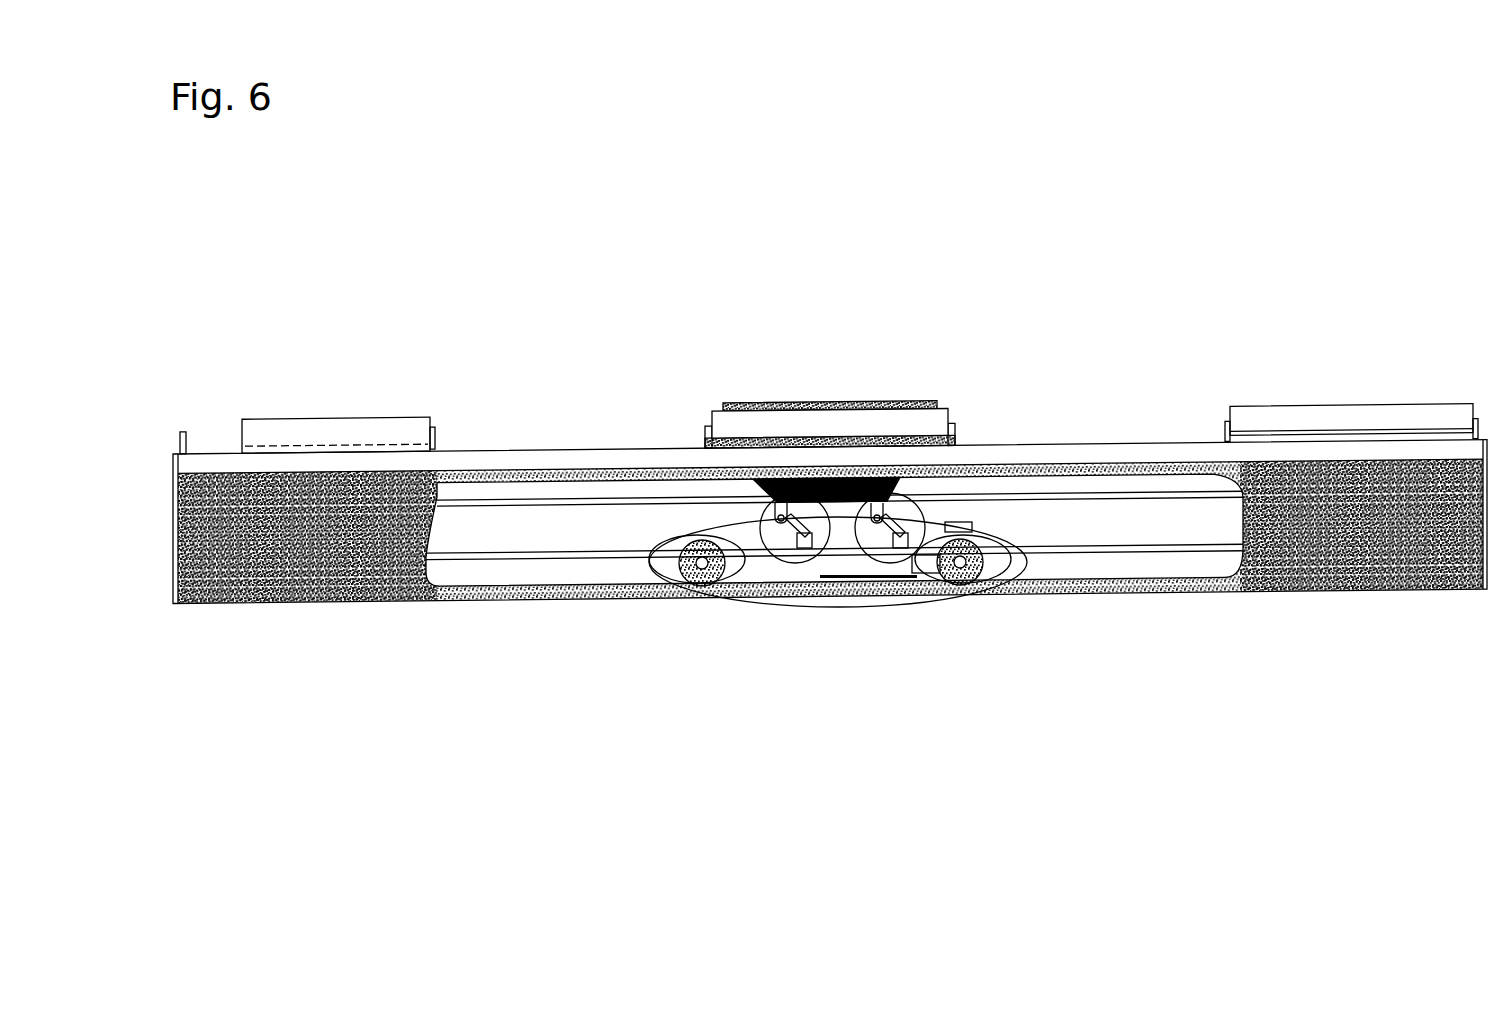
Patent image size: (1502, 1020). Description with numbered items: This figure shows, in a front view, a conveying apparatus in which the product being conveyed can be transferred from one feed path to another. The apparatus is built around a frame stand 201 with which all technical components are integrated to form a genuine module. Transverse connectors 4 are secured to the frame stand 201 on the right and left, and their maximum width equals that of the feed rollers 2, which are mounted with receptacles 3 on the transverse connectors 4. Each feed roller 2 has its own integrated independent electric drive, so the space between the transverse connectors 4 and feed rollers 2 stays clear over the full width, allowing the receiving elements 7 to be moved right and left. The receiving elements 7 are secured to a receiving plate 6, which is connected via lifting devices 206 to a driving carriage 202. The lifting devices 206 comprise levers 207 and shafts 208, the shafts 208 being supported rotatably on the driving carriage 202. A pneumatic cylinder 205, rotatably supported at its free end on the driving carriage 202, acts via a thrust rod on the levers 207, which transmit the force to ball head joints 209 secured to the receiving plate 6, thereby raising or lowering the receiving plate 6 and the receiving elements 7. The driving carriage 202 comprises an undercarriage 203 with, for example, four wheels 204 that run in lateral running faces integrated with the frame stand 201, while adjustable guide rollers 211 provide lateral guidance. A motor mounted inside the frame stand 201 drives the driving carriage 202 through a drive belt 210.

The feed rollers 2 is at (258, 433).
The receptacles 3 is at (195, 453).
The transverse connectors 4 is at (310, 467).
The receiving plate 6 is at (867, 492).
The receiving elements 7 is at (835, 403).
The frame stand 201 is at (1438, 450).
The driving carriage 202 is at (1015, 571).
The undercarriage 203 is at (922, 562).
The wheels 204 is at (950, 567).
The pneumatic cylinder 205 is at (913, 566).
The lifting devices 206 is at (889, 533).
The levers 207 is at (887, 528).
The shafts 208 is at (803, 542).
The ball head joints 209 is at (882, 510).
The drive belt 210 is at (512, 506).
The guide rollers 211 is at (962, 523).